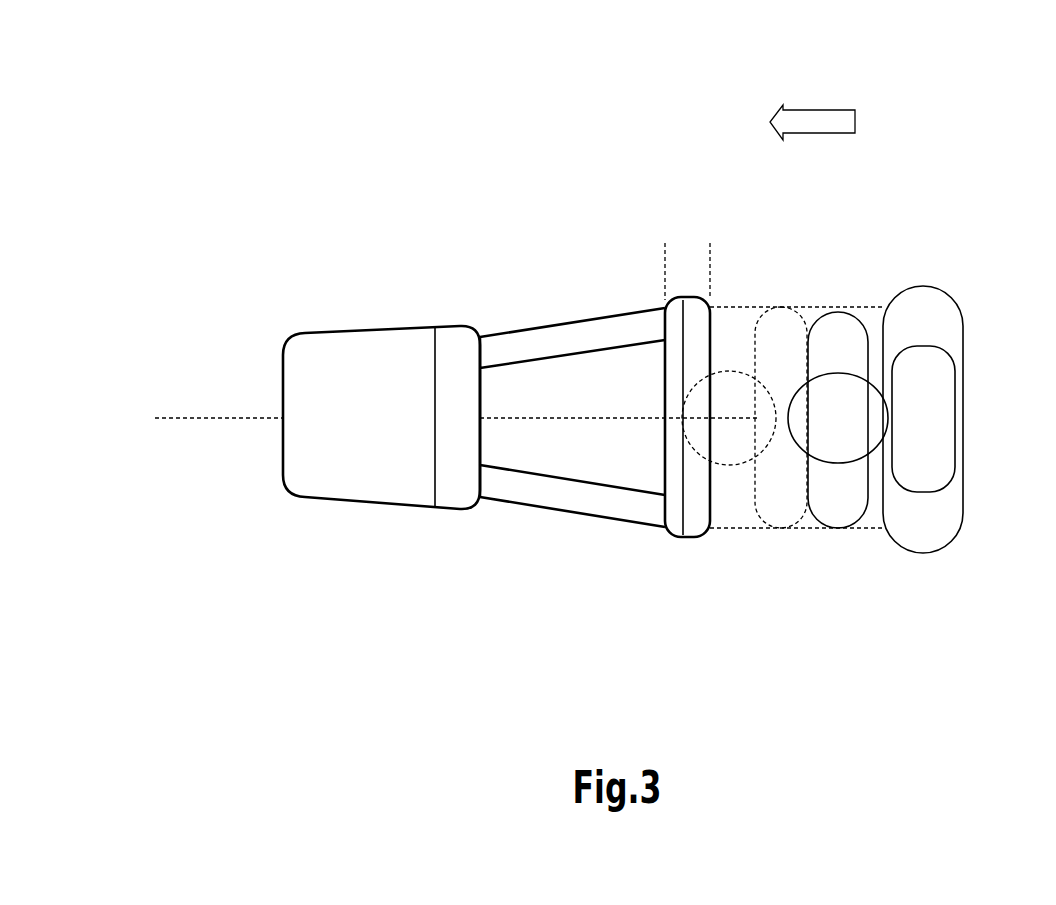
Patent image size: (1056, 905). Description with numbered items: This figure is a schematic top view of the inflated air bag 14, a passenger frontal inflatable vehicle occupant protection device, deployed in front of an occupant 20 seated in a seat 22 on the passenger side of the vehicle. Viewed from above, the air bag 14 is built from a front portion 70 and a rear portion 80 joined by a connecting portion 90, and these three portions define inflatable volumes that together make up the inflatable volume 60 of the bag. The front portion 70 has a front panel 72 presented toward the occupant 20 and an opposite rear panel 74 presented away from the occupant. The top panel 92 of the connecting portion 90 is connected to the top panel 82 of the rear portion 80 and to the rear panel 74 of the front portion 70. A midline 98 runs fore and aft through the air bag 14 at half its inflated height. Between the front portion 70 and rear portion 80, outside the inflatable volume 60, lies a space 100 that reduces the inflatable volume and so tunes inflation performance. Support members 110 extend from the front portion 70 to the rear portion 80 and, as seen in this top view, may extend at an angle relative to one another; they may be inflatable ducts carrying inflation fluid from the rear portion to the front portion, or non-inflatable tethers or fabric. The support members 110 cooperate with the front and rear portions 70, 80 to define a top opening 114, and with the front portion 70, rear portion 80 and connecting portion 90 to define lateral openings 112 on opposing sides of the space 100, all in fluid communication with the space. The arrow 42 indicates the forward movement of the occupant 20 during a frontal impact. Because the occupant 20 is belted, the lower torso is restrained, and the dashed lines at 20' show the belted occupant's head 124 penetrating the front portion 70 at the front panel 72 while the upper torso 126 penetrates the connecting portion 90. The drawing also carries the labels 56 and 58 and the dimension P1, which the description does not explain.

The inflatable vehicle occupant protection device 14 is at (332, 212).
The occupant 20 is at (872, 365).
The occupant in penetrated position 20' is at (768, 489).
The seat 22 is at (942, 400).
The arrow indicating forward movement 42 is at (812, 111).
The slider 56 is at (267, 370).
The slider end 58 is at (713, 362).
The inflatable volume 60 is at (377, 418).
The front portion 70 is at (690, 367).
The front panel 72 is at (710, 322).
The rear panel 74 is at (653, 492).
The rear portion 80 is at (383, 457).
The top panel of the rear portion 82 is at (320, 385).
The connecting portion 90 is at (538, 443).
The top panel of the connecting portion 92 is at (560, 452).
The midline 98 is at (187, 416).
The space 100 is at (548, 400).
The support members 110 is at (616, 332).
The lateral openings 112 is at (589, 335).
The top opening 114 is at (495, 412).
The head 124 is at (847, 392).
The torso 126 is at (843, 517).
The ring width P1 is at (627, 273).